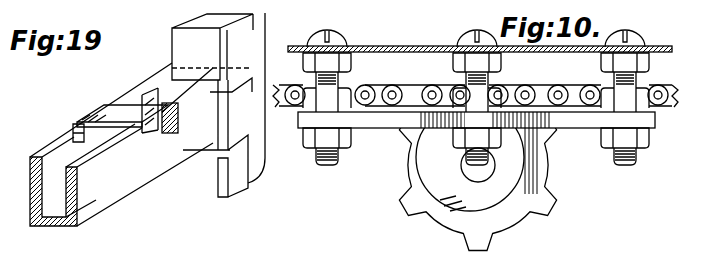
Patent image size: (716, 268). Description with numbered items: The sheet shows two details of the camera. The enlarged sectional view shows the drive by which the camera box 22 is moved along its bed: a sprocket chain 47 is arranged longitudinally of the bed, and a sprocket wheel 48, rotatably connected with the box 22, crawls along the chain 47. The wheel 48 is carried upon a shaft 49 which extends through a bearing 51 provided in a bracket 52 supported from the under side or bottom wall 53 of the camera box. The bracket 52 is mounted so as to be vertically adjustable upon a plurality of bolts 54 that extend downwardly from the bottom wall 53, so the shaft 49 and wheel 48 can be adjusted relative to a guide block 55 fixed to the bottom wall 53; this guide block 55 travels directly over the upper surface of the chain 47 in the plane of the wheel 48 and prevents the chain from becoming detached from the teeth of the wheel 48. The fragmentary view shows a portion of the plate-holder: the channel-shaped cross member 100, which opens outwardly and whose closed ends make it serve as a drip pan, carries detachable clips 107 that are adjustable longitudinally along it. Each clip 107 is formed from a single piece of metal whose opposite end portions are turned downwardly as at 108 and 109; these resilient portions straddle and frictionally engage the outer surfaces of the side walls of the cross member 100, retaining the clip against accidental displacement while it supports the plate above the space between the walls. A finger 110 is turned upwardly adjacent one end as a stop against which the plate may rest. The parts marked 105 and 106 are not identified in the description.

In FIG. 19, the cross member 100 is at (94, 190).
In FIG. 19, the rod 105 is at (249, 133).
In FIG. 19, the post block 106 is at (198, 130).
In FIG. 19, the clip 107 is at (114, 117).
In FIG. 19, the turned-down end portion 108 is at (72, 135).
In FIG. 19, the turned-down end portion 109 is at (163, 130).
In FIG. 19, the finger 110 is at (165, 72).
In FIG. 10, the box 22 is at (588, 47).
In FIG. 10, the sprocket chain 47 is at (667, 100).
In FIG. 10, the sprocket wheel 48 is at (545, 200).
In FIG. 10, the shaft 49 is at (476, 176).
In FIG. 10, the bearing 51 is at (498, 188).
In FIG. 10, the bracket 52 is at (585, 115).
In FIG. 10, the bottom wall 53 is at (377, 47).
In FIG. 10, the bolt 54 is at (640, 80).
In FIG. 10, the guide block 55 is at (444, 66).